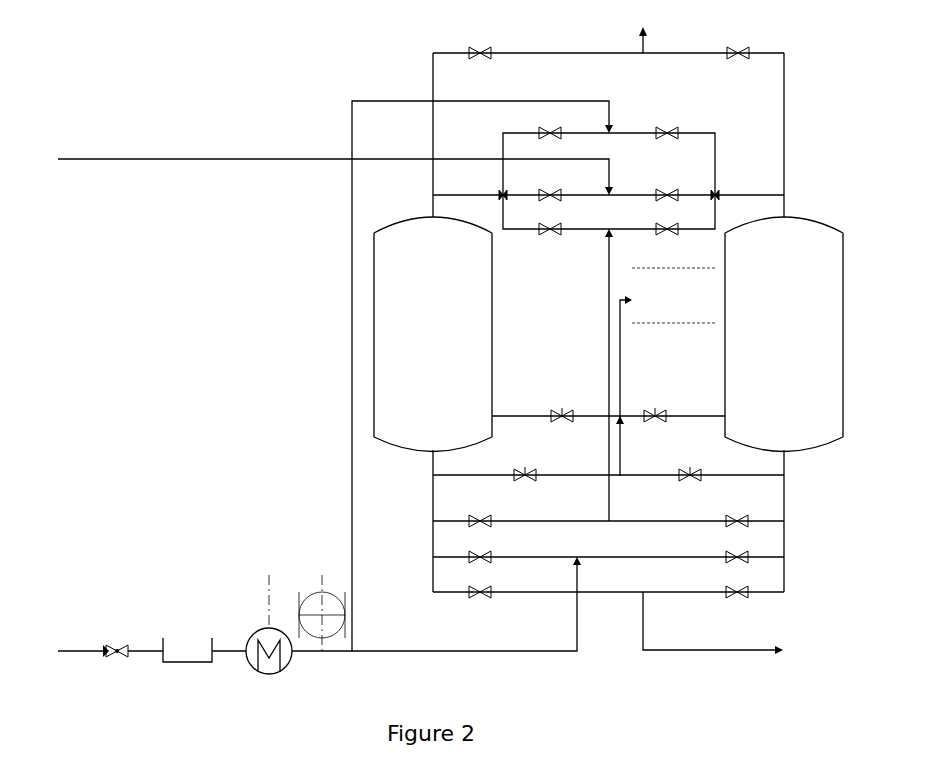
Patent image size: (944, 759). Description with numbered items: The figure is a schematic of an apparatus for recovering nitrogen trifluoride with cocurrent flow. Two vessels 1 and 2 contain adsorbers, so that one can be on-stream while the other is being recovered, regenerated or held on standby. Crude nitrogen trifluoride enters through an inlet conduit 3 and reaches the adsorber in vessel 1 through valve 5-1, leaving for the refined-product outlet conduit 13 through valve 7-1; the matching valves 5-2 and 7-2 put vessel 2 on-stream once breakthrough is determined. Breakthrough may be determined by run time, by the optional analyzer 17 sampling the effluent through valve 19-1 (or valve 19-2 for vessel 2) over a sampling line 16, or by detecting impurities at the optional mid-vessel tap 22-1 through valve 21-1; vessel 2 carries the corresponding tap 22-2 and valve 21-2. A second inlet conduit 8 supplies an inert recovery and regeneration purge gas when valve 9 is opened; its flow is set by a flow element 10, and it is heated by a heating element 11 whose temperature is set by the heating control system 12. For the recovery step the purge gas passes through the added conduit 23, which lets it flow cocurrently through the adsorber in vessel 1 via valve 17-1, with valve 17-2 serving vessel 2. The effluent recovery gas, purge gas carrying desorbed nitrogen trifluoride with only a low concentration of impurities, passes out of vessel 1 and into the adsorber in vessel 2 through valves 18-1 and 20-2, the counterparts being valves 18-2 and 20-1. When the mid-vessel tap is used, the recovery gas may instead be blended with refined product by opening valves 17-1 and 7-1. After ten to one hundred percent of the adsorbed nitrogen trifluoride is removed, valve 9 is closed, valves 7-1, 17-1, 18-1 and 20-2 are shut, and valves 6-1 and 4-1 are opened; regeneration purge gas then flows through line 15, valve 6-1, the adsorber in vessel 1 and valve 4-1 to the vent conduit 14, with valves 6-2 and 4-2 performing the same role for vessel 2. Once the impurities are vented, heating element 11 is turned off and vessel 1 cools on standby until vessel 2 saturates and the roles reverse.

The vessel 1 is at (433, 322).
The vessel 2 is at (784, 322).
The inlet conduit 3 is at (334, 157).
The valve 4-1 is at (480, 66).
The vent valve for vessel 2 4-2 is at (738, 66).
The valve 5-1 is at (550, 187).
The valve 5-2 is at (667, 187).
The valve 6-1 is at (480, 568).
The recirculation valve for vessel 2 6-2 is at (737, 568).
The valve 7-1 is at (480, 604).
The valve 7-2 is at (737, 604).
The inlet conduit 8 is at (82, 641).
The valve 9 is at (133, 663).
The flow element 10 is at (204, 664).
The heating element 11 is at (295, 633).
The heating control system 12 is at (322, 613).
The outlet conduit 13 is at (735, 643).
The vent conduit 14 is at (608, 31).
The conduit 15 is at (463, 614).
The line to analyzer 16 is at (625, 375).
The analyzer 17 is at (665, 372).
The valve 17-1 is at (550, 126).
The analyzer line valve for vessel 2 17-2 is at (667, 126).
The valve 18-1 is at (480, 533).
The bottom valve for vessel 2 18-2 is at (737, 533).
The valve 19-1 is at (525, 486).
The bottom sampling valve for vessel 2 19-2 is at (690, 486).
The top bypass valve for vessel 1 20-1 is at (550, 220).
The valve 20-2 is at (667, 220).
The valve 21-1 is at (565, 426).
The side sampling valve for vessel 2 21-2 is at (652, 427).
The mid-vessel tap 22-1 is at (538, 427).
The side sampling line for vessel 2 22-2 is at (684, 426).
The conduit 23 is at (482, 376).